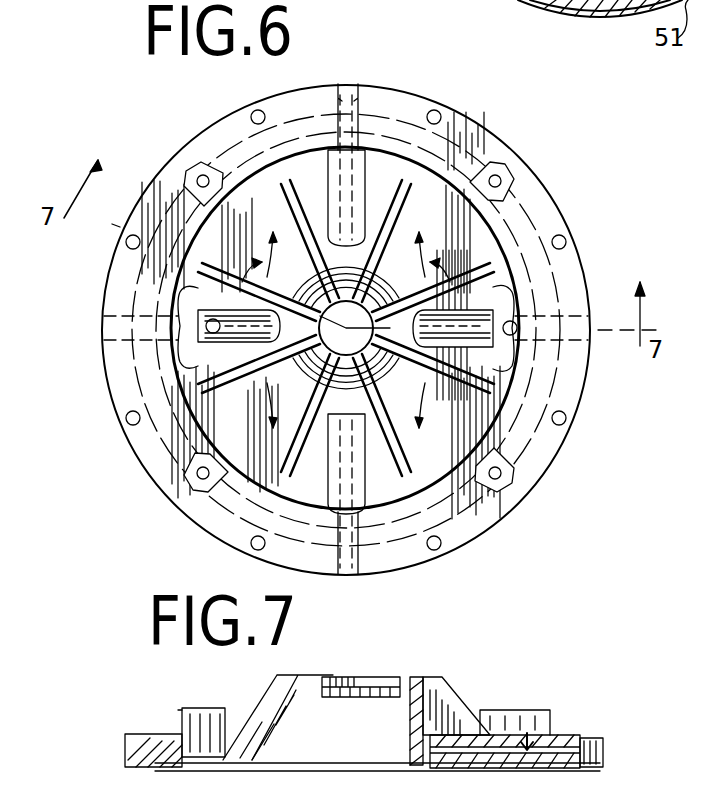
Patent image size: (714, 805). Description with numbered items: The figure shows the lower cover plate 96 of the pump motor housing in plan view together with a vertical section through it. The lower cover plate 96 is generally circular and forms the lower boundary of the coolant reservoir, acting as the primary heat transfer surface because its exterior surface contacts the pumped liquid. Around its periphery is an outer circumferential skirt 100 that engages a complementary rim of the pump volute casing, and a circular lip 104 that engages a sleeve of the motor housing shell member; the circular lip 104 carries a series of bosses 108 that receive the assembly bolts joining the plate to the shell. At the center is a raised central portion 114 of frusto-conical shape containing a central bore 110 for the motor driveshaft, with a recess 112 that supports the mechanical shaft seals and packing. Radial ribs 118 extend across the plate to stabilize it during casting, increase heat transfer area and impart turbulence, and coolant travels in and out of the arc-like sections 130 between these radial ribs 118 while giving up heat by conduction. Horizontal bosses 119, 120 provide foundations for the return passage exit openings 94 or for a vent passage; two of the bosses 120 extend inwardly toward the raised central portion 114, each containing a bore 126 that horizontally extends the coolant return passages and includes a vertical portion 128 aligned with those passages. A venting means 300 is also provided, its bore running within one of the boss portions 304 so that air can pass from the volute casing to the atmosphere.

In FIG. 6, the outer circumferential skirt 100 is at (506, 140).
In FIG. 7, the outer circumferential skirt 100 is at (160, 772).
In FIG. 6, the lower cover plate 96 is at (538, 186).
In FIG. 6, the radial ribs 118 is at (282, 190).
In FIG. 6, the bosses 108 is at (190, 170).
In FIG. 6, the venting means 300 is at (340, 82).
In FIG. 6, the boss portion 304 is at (364, 178).
In FIG. 6, the central bore 110 is at (352, 312).
In FIG. 7, the central bore 110 is at (370, 675).
In FIG. 6, the raised central portion 114 is at (410, 265).
In FIG. 7, the raised central portion 114 is at (450, 703).
In FIG. 6, the horizontal bosses 120 is at (205, 302).
In FIG. 6, the return passage exit openings 94 is at (200, 355).
In FIG. 6, the arc-like sections 130 is at (226, 418).
In FIG. 6, the horizontal bosses 119 is at (368, 485).
In FIG. 6, the circular lip 104 is at (350, 545).
In FIG. 7, the circular lip 104 is at (182, 706).
In FIG. 7, the recess 112 is at (377, 690).
In FIG. 7, the vertical portion 128 is at (528, 733).
In FIG. 7, the bore 126 is at (570, 750).